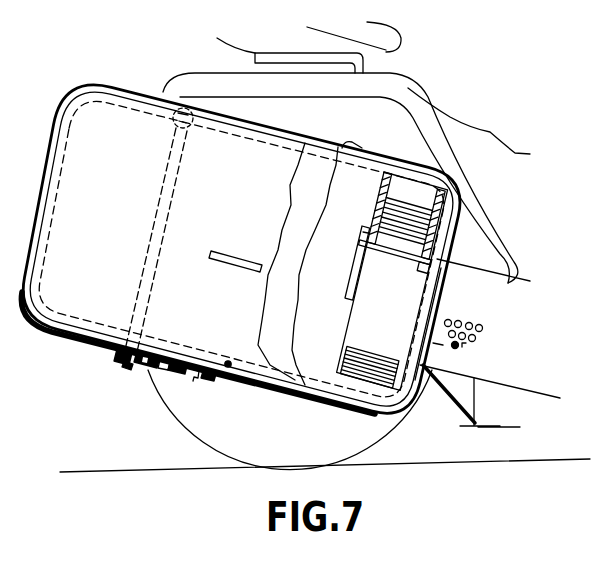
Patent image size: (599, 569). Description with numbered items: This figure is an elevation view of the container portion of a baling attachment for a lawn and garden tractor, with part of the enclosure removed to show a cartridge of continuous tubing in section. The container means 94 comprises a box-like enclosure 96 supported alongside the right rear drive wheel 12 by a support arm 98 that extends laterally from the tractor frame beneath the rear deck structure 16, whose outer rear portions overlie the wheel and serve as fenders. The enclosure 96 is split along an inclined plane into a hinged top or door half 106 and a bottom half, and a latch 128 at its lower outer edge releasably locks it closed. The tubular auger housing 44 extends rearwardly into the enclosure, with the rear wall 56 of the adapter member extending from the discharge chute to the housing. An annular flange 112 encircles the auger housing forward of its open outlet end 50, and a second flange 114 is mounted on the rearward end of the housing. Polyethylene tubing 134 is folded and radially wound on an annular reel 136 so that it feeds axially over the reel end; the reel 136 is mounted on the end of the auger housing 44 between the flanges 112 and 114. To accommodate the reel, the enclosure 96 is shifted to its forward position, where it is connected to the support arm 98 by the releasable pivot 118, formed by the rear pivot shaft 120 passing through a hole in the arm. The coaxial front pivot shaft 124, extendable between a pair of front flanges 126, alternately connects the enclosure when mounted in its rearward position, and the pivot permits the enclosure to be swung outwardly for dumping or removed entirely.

The rear drive wheel 12 is at (171, 415).
The rear deck structure 16 is at (450, 118).
The auger housing 44 is at (512, 291).
The outlet end 50 is at (373, 281).
The rear wall 56 is at (454, 390).
The container means 94 is at (68, 95).
The enclosure 96 is at (111, 104).
The support arm 98 is at (126, 366).
The door half 106 is at (127, 204).
The annular flange 112 is at (436, 306).
The second flange 114 is at (362, 283).
The pivot 118 is at (112, 361).
The rear pivot shaft 120 is at (134, 366).
The front pivot shaft 124 is at (194, 378).
The front flanges 126 is at (209, 378).
The latch 128 is at (228, 361).
The polyethylene tubing 134 is at (338, 150).
The reel 136 is at (340, 368).